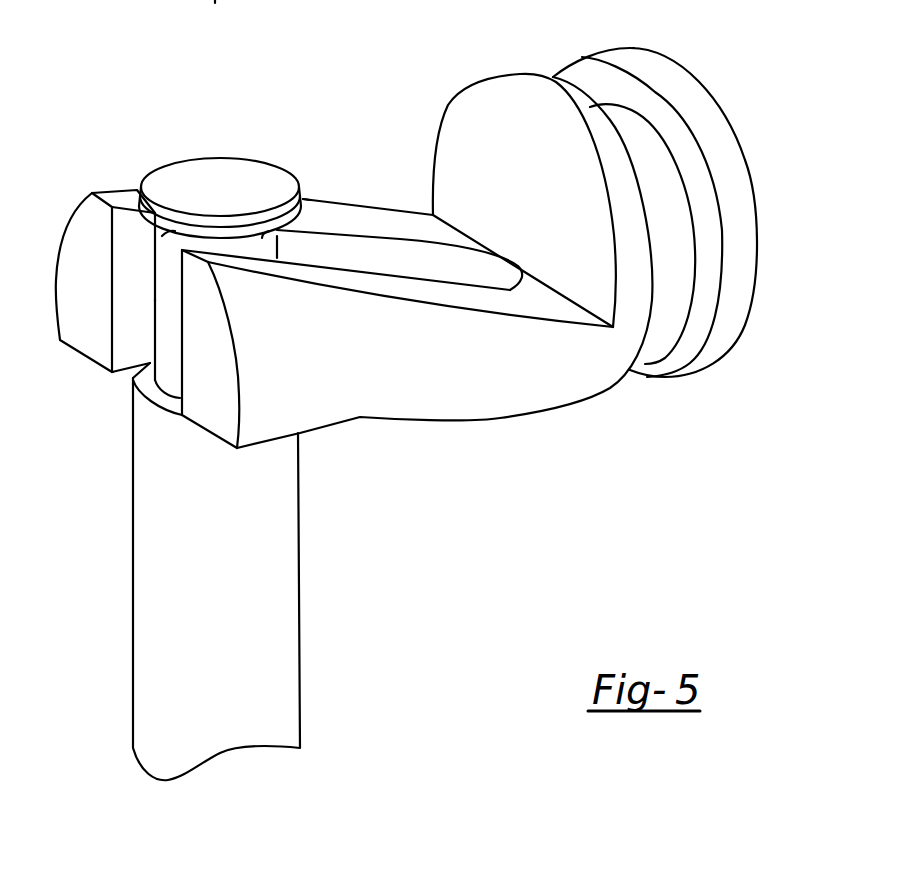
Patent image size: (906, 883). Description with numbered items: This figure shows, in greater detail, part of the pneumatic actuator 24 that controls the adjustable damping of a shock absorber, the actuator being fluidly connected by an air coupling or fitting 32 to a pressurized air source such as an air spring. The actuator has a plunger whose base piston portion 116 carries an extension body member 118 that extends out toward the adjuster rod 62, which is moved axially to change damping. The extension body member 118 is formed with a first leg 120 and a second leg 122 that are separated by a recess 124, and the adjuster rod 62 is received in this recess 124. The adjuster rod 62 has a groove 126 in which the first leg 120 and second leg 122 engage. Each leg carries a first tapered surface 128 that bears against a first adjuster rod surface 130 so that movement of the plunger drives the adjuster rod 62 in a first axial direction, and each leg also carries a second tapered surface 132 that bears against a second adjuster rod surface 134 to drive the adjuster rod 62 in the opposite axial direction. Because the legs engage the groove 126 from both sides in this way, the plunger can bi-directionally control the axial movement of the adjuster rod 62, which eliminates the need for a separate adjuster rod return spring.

The pneumatic actuator 24 is at (696, 54).
The air coupling or fitting 32 is at (217, 11).
The adjuster rod 62 is at (143, 518).
The base piston portion 116 is at (750, 280).
The extension body member 118 is at (560, 380).
The first leg 120 is at (65, 257).
The second leg 122 is at (437, 378).
The recess 124 is at (167, 293).
The groove 126 is at (272, 237).
The first tapered surface 128 is at (433, 293).
The first adjuster rod surface 130 is at (157, 242).
The second tapered surface 132 is at (127, 370).
The second adjuster rod surface 134 is at (165, 402).